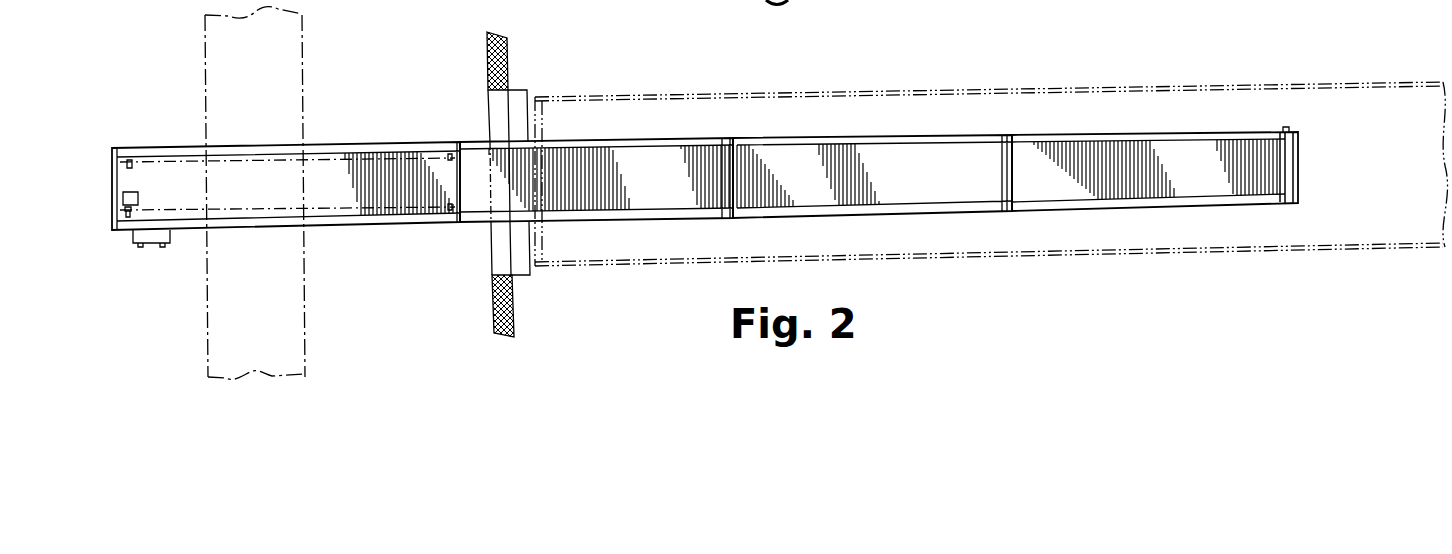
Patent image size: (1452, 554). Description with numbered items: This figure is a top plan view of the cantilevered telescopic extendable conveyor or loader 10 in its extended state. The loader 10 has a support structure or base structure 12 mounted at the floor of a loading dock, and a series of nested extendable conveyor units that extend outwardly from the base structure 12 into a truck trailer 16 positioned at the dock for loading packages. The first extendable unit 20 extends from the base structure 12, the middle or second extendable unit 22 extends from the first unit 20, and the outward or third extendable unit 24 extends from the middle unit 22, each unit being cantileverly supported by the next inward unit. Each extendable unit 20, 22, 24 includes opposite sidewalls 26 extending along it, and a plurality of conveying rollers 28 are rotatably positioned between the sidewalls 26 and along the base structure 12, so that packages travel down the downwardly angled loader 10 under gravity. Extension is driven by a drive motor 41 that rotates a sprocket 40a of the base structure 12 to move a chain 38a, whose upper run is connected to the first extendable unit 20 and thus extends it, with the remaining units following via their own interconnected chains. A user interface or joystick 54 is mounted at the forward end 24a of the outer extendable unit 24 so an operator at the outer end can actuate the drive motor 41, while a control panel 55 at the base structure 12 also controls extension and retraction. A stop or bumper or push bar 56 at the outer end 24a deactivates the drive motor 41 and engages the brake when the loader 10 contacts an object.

The cantilevered telescopic extendable conveyor or loader 10 is at (444, 102).
The support structure or base structure 12 is at (323, 175).
The truck trailer 16 is at (738, 92).
The first extendable unit 20 is at (648, 163).
The middle or second extendable unit 22 is at (932, 160).
The outward or third extendable unit 24 is at (1187, 162).
The forward end of forward extendable unit 24a is at (1280, 203).
The opposite sidewalls 26 is at (847, 135).
The conveying rollers 28 is at (1108, 160).
The chain 38a is at (197, 162).
The sprocket of base structure 40a is at (128, 210).
The drive motor 41 is at (140, 202).
The user interface or input or joystick 54 is at (1286, 122).
The control panel 55 is at (150, 245).
The stop or bumper or push bar 56 is at (1300, 167).